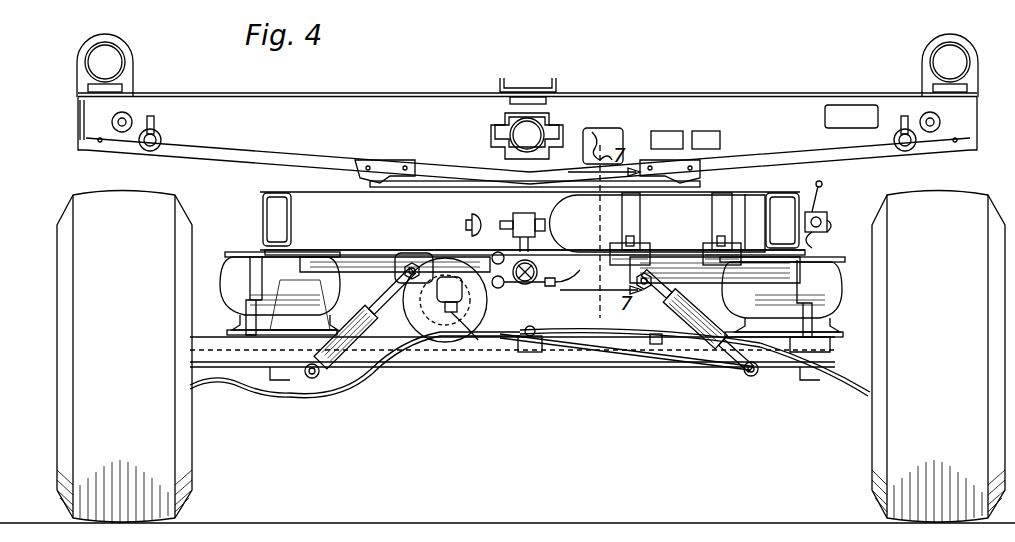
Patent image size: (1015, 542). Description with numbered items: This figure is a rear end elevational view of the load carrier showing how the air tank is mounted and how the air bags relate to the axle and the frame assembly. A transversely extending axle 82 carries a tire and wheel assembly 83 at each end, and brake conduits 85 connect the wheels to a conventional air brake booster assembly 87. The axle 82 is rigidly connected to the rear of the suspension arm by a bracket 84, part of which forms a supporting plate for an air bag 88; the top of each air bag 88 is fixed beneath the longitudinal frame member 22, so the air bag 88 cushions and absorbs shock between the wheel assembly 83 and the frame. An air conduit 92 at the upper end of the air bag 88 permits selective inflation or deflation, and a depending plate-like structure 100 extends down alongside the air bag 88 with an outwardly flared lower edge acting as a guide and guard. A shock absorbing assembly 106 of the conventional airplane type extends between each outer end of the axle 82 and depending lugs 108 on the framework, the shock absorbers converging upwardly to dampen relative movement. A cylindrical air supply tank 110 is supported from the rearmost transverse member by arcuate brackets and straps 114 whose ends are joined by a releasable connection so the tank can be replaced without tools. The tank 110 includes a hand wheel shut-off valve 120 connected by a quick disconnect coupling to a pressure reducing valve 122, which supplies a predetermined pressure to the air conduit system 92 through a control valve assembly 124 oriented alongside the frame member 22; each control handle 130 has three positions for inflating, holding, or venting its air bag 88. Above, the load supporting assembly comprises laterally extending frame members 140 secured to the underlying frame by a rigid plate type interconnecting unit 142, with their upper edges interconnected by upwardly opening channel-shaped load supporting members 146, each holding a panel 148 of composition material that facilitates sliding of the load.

The longitudinal frame member 22 is at (265, 196).
The axle 82 is at (623, 350).
The tire and wheel assembly 83 is at (900, 441).
The bracket 84 is at (822, 342).
The brake conduits 85 is at (857, 378).
The air brake booster assembly 87 is at (520, 352).
The air bag 88 is at (828, 288).
The air conduit 92 is at (590, 258).
The depending plate-like structure 100 is at (277, 265).
The shock absorbing assembly 106 is at (385, 333).
The depending lugs 108 is at (398, 268).
The air supply tank 110 is at (748, 210).
The straps 114 is at (725, 182).
The shut-off valve 120 is at (508, 210).
The pressure reducing valve 122 is at (520, 283).
The control valve assembly 124 is at (838, 220).
The control handle 130 is at (824, 187).
The laterally extending frame members 140 is at (740, 106).
The plate type interconnecting unit 142 is at (370, 177).
The channel-shaped load supporting members 146 is at (556, 88).
The panel 148 is at (520, 90).